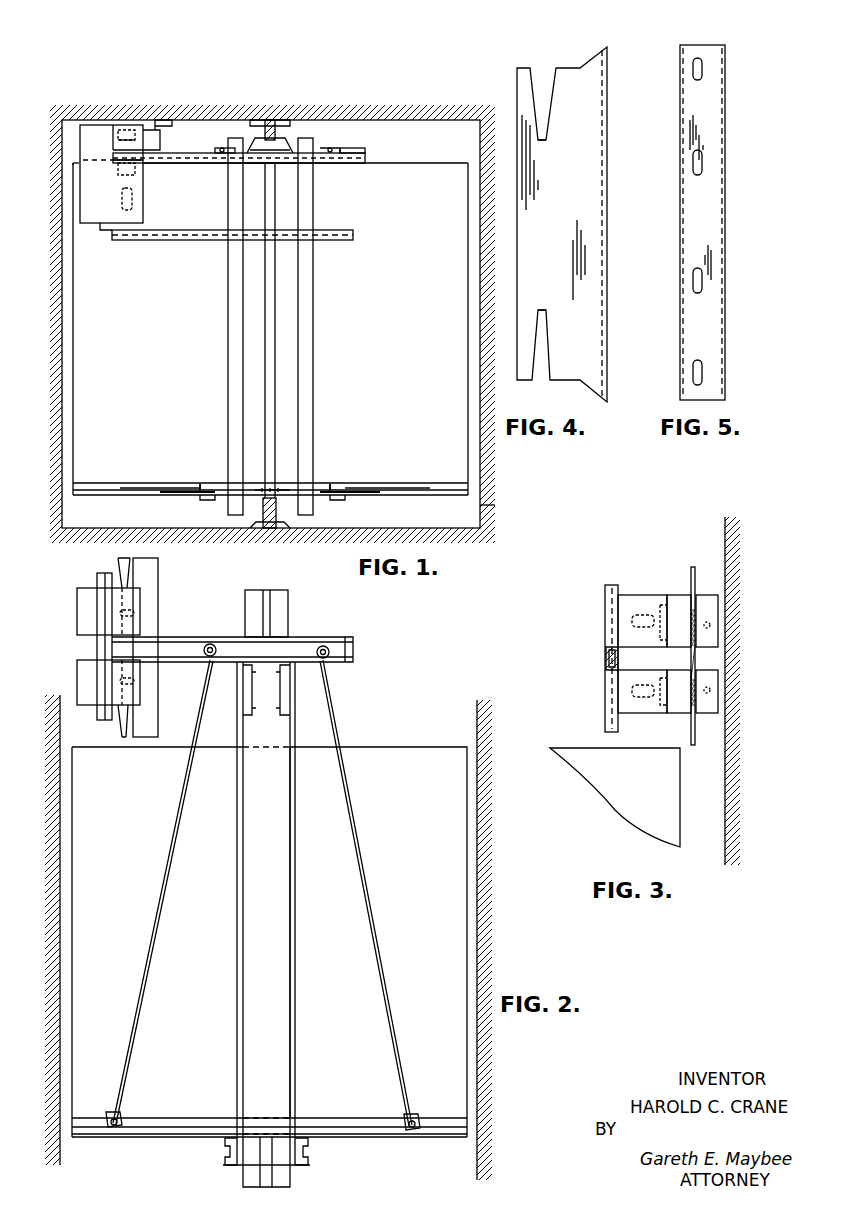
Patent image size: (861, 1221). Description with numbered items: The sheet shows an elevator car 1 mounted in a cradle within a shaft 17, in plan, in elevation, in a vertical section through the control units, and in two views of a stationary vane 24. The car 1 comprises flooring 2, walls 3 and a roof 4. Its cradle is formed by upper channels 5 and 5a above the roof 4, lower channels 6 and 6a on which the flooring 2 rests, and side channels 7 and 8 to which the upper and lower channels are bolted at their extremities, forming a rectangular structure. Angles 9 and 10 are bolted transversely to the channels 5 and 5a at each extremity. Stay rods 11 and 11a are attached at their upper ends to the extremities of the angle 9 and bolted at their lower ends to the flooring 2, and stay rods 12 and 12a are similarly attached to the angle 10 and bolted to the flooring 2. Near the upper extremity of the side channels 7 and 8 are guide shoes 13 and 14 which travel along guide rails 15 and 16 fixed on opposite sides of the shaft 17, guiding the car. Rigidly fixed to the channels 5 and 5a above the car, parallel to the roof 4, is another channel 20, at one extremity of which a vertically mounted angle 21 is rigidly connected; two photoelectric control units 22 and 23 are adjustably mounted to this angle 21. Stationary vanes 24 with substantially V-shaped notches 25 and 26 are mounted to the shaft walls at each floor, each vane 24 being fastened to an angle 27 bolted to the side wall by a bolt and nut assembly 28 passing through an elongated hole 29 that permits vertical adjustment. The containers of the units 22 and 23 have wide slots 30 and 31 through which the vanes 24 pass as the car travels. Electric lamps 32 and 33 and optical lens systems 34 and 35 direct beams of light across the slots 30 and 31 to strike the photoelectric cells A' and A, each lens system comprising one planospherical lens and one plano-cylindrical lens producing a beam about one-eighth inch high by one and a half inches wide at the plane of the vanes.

In FIG. 1, the elevator car 1 is at (422, 402).
In FIG. 3, the elevator car 1 is at (620, 822).
In FIG. 2, the elevator car 1 is at (380, 747).
In FIG. 2, the flooring 2 is at (175, 1120).
In FIG. 1, the walls 3 is at (455, 185).
In FIG. 3, the walls 3 is at (732, 691).
In FIG. 2, the walls 3 is at (60, 935).
In FIG. 1, the roof 4 is at (375, 180).
In FIG. 2, the roof 4 is at (415, 747).
In FIG. 1, the upper channel 5 is at (228, 372).
In FIG. 2, the upper channel 5 is at (237, 725).
In FIG. 1, the upper channel 5a is at (313, 362).
In FIG. 2, the upper channel 5a is at (295, 718).
In FIG. 1, the lower channel 6 is at (205, 500).
In FIG. 2, the lower channel 6 is at (225, 1148).
In FIG. 1, the lower channel 6a is at (345, 500).
In FIG. 2, the lower channel 6a is at (308, 1148).
In FIG. 1, the side channel 7 is at (245, 165).
In FIG. 1, the side channel 8 is at (300, 488).
In FIG. 2, the side channel 8 is at (290, 945).
In FIG. 1, the angle 9 is at (270, 488).
In FIG. 2, the angle 9 is at (320, 645).
In FIG. 1, the angle 10 is at (290, 165).
In FIG. 1, the stay rod 11 is at (208, 484).
In FIG. 2, the stay rod 11 is at (160, 886).
In FIG. 1, the stay rod 11a is at (345, 485).
In FIG. 2, the stay rod 11a is at (365, 880).
In FIG. 1, the stay rod 12 is at (225, 148).
In FIG. 1, the stay rod 12a is at (350, 148).
In FIG. 1, the guide shoe 13 is at (285, 138).
In FIG. 1, the guide shoe 14 is at (262, 518).
In FIG. 1, the guide rail 15 is at (268, 120).
In FIG. 2, the guide rail 15 is at (288, 598).
In FIG. 1, the guide rail 16 is at (290, 525).
In FIG. 1, the shaft 17 is at (480, 510).
In FIG. 1, the channel 20 is at (195, 240).
In FIG. 3, the channel 20 is at (611, 658).
In FIG. 2, the channel 20 is at (183, 637).
In FIG. 1, the angle 21 is at (105, 232).
In FIG. 2, the angle 21 is at (97, 582).
In FIG. 1, the photoelectric control unit 22 is at (80, 205).
In FIG. 3, the photoelectric control unit 22 is at (638, 595).
In FIG. 2, the photoelectric control unit 22 is at (77, 613).
In FIG. 3, the photoelectric control unit 23 is at (645, 713).
In FIG. 2, the photoelectric control unit 23 is at (77, 673).
In FIG. 1, the stationary vane 24 is at (185, 165).
In FIG. 4, the stationary vane 24 is at (598, 165).
In FIG. 3, the stationary vane 24 is at (693, 567).
In FIG. 2, the stationary vane 24 is at (150, 578).
In FIG. 1, the notch 25 is at (118, 150).
In FIG. 4, the notch 25 is at (545, 110).
In FIG. 3, the notch 25 is at (690, 580).
In FIG. 2, the notch 25 is at (124, 573).
In FIG. 4, the notch 26 is at (544, 335).
In FIG. 3, the notch 26 is at (694, 745).
In FIG. 2, the notch 26 is at (123, 721).
In FIG. 1, the angle 27 is at (160, 135).
In FIG. 1, the bolt and nut assembly 28 is at (165, 120).
In FIG. 5, the elongated hole 29 is at (693, 70).
In FIG. 1, the wide slot 30 is at (138, 168).
In FIG. 3, the wide slot 30 is at (680, 610).
In FIG. 3, the wide slot 31 is at (682, 700).
In FIG. 1, the electric lamp 32 is at (132, 200).
In FIG. 3, the electric lamp 32 is at (632, 620).
In FIG. 3, the electric lamp 33 is at (632, 692).
In FIG. 1, the optical lens system 34 is at (118, 170).
In FIG. 3, the optical lens system 34 is at (630, 643).
In FIG. 3, the optical lens system 35 is at (630, 676).
In FIG. 3, the photoelectric cell A is at (707, 717).
In FIG. 1, the photoelectric cell A' is at (123, 113).
In FIG. 3, the photoelectric cell A' is at (707, 596).